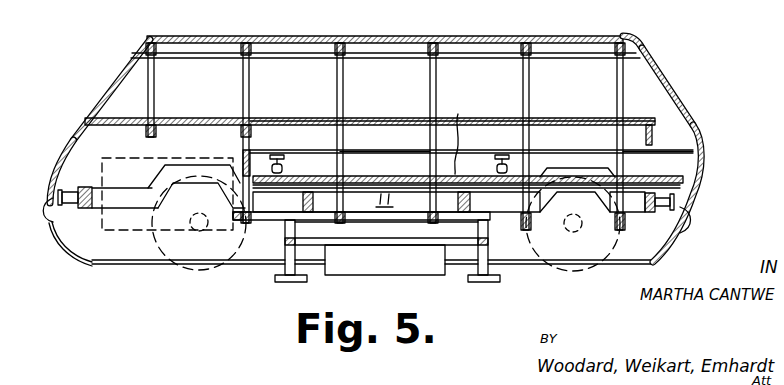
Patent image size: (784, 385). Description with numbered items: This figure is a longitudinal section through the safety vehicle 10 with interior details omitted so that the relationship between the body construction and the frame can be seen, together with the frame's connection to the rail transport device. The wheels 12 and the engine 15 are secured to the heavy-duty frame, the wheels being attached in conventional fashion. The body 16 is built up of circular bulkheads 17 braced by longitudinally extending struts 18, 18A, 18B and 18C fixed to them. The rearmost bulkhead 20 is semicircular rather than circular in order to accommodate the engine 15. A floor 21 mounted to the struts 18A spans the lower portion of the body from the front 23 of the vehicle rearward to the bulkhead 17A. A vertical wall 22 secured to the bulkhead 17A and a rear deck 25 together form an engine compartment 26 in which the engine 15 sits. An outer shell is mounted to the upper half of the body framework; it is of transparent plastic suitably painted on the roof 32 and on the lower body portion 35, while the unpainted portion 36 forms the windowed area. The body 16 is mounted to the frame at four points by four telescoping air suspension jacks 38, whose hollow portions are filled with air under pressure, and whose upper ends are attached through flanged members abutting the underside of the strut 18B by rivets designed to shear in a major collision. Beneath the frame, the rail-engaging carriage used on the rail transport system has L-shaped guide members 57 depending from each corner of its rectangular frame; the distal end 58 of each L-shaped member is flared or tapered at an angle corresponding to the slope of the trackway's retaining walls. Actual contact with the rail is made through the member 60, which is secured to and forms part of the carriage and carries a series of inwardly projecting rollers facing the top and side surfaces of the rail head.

The safety vehicle 10 is at (662, 57).
The wheels 12 is at (155, 242).
The engine 15 is at (117, 222).
The body 16 is at (701, 133).
The circular bulkheads 17 is at (430, 85).
The bulkhead 17A is at (251, 85).
The longitudinally extending struts 18 is at (545, 143).
The strut 18A is at (697, 170).
The strut 18B is at (358, 153).
The strut 18C is at (568, 60).
The rearmost bulkhead 20 is at (148, 88).
The floor 21 is at (460, 134).
The vertical wall 22 is at (254, 134).
The front 23 is at (698, 182).
The rear deck 25 is at (166, 118).
The engine compartment 26 is at (85, 165).
The roof 32 is at (317, 36).
The lower body portion 35 is at (693, 200).
The unpainted portion 36 is at (673, 95).
The telescoping air suspension jacks 38 is at (286, 168).
The L-shaped guide members 57 is at (286, 268).
The distal end 58 is at (280, 282).
The rail-contacting member 60 is at (373, 269).